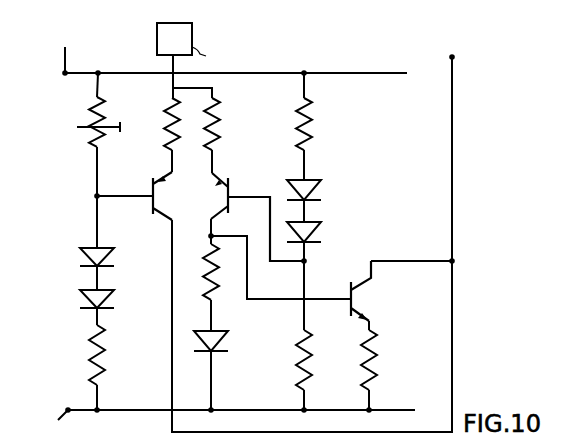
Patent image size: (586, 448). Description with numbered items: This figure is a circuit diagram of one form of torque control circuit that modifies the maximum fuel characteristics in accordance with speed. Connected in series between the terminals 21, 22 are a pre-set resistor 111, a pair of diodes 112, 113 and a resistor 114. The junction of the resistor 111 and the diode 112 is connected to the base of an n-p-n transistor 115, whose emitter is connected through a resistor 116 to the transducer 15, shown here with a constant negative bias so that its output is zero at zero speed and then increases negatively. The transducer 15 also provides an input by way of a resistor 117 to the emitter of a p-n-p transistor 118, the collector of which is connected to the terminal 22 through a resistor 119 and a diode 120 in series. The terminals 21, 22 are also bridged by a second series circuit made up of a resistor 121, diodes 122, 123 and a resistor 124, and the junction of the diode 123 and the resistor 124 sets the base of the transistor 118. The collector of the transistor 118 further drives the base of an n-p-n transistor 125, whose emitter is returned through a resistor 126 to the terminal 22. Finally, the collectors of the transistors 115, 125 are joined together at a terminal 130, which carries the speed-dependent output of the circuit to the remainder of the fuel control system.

The transducer 15 is at (186, 36).
The terminal 21 is at (223, 57).
The terminal 22 is at (226, 427).
The pre-set resistor 111 is at (97, 103).
The diode 112 is at (81, 251).
The diode 113 is at (81, 294).
The resistor 114 is at (90, 371).
The transistor 115 is at (160, 216).
The resistor 116 is at (168, 128).
The resistor 117 is at (222, 118).
The transistor 118 is at (231, 183).
The resistor 119 is at (205, 286).
The diode 120 is at (220, 351).
The resistor 121 is at (314, 128).
The diode 122 is at (321, 183).
The diode 123 is at (321, 228).
The resistor 124 is at (308, 378).
The transistor 125 is at (361, 272).
The resistor 126 is at (373, 373).
The terminal 130 is at (452, 57).